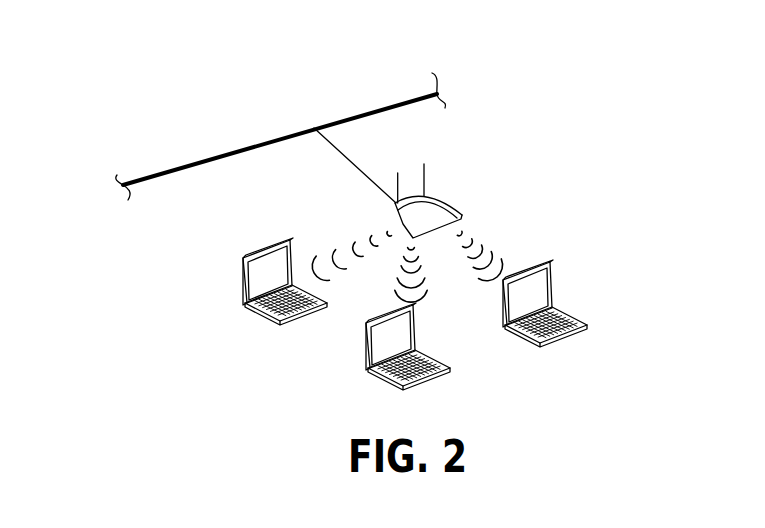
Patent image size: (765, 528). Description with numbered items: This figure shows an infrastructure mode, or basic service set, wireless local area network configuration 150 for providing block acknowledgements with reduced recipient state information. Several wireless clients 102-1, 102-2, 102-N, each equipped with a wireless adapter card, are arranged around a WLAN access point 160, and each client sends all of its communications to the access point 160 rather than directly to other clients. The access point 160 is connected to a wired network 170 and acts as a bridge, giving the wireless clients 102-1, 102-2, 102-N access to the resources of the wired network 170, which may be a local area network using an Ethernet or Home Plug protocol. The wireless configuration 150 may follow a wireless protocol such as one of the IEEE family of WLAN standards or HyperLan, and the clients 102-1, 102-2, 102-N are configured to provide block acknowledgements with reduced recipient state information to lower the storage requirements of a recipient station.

The wired network 170 is at (263, 143).
The WLAN access point 160 is at (460, 209).
The wireless client 102-N is at (243, 278).
The wireless client 102-2 is at (367, 343).
The wireless client 102-1 is at (554, 282).
The wireless local area network configuration 150 is at (628, 391).